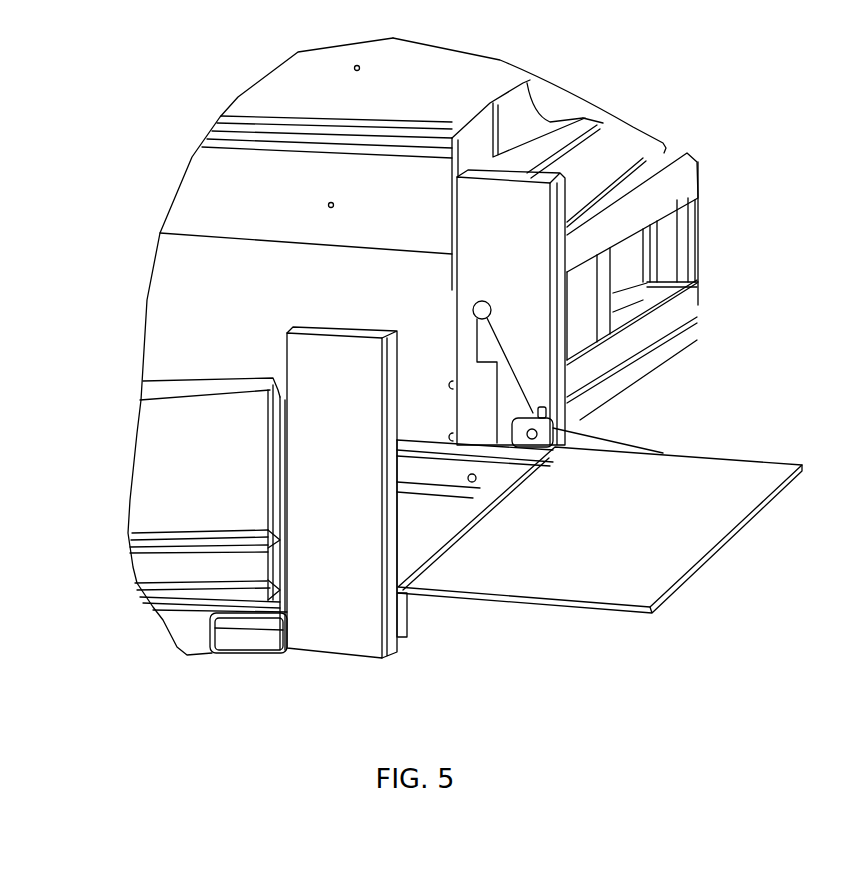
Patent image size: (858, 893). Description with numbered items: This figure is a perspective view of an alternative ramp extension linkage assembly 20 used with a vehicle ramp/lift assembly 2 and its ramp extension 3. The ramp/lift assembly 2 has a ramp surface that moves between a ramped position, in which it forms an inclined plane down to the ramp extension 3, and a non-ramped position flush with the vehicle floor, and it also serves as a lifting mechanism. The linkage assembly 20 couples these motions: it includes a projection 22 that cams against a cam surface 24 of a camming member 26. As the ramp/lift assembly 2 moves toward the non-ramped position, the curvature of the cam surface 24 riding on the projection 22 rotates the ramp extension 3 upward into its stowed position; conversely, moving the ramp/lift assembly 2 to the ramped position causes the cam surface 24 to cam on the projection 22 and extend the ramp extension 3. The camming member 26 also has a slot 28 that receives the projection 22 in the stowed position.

The ramp/lift assembly 2 is at (462, 521).
The ramp extension 3 is at (718, 518).
The linkage assembly 20 is at (606, 414).
The projection 22 is at (483, 301).
The cam surface 24 is at (503, 345).
The camming member 26 is at (505, 388).
The slot 28 is at (537, 405).